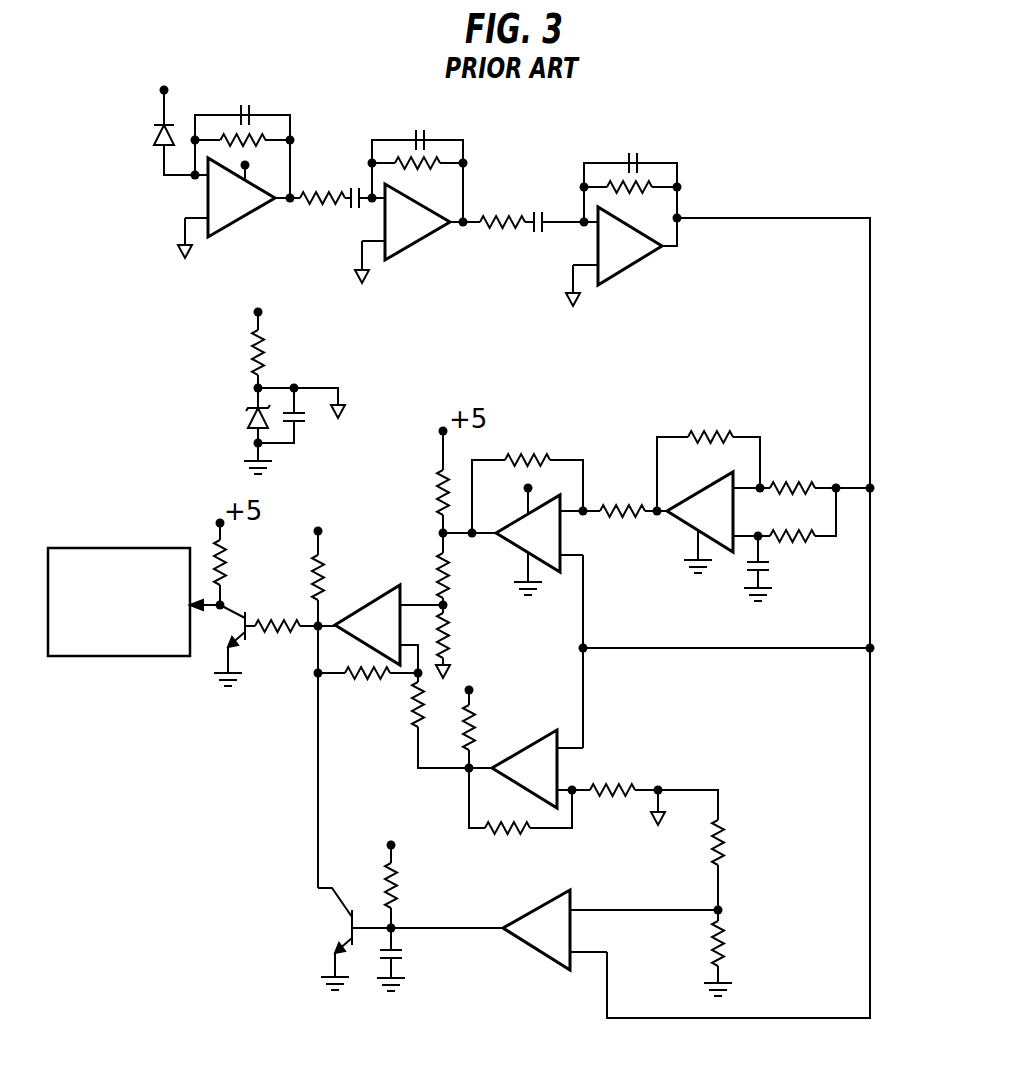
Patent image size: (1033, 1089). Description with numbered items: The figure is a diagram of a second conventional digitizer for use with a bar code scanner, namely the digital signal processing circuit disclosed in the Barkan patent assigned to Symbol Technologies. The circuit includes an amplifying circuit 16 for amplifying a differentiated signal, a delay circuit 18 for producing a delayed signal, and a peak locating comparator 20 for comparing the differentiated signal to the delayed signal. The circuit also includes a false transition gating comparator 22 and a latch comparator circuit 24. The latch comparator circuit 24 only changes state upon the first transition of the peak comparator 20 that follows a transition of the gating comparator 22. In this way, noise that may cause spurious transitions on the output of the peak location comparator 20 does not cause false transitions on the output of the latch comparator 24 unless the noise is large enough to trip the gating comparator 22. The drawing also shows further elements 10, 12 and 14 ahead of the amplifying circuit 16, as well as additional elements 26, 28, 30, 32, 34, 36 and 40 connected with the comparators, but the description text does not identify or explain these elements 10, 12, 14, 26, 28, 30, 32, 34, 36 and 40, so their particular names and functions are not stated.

The photodiode 10 is at (156, 142).
The amplifier 12 is at (246, 226).
The amplifier 14 is at (418, 246).
The amplifying circuit 16 is at (634, 268).
The delay circuit 18 is at (776, 452).
The peak locating comparator 20 is at (608, 470).
The false transition gating comparator 22 is at (456, 788).
The latch comparator circuit 24 is at (372, 603).
The comparator 26 is at (540, 954).
The resistor 28 is at (730, 846).
The resistor 30 is at (730, 943).
The capacitor 32 is at (401, 952).
The transistor 34 is at (352, 915).
The bar pattern decoder 36 is at (122, 547).
The zener diode 40 is at (248, 428).